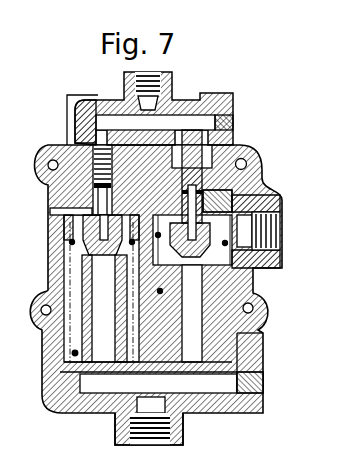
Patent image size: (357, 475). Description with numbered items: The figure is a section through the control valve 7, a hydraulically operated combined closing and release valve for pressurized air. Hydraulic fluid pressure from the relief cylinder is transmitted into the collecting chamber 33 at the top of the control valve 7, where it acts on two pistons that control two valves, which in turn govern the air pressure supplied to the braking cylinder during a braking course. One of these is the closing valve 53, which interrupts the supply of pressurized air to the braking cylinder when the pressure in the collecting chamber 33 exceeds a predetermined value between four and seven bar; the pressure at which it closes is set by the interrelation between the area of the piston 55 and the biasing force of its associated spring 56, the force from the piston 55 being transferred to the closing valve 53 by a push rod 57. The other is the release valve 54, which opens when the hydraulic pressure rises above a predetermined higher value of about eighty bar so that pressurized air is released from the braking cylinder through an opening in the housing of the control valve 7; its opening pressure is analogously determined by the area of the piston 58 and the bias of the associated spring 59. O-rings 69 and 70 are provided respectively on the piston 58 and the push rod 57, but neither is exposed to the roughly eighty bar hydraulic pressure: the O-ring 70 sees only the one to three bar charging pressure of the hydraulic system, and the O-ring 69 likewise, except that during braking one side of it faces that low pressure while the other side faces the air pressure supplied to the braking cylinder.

The control valve 7 is at (44, 417).
The collecting chamber 33 is at (170, 125).
The closing valve 53 is at (254, 289).
The release valve 54 is at (84, 250).
The piston 55 is at (190, 158).
The spring 56 is at (228, 292).
The push rod 57 is at (236, 200).
The piston 58 is at (98, 155).
The spring 59 is at (72, 355).
The O-ring 69 is at (90, 188).
The O-ring 70 is at (212, 192).